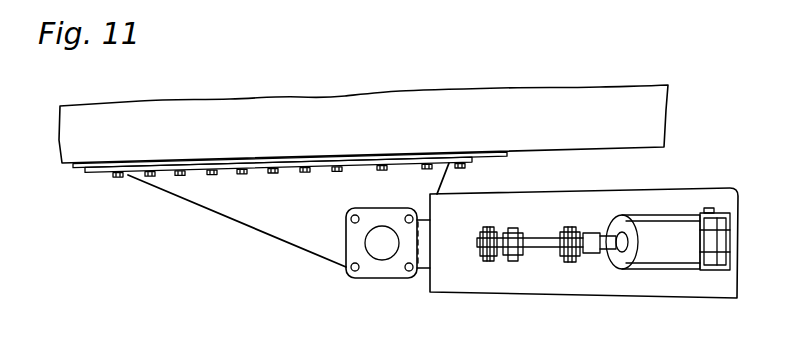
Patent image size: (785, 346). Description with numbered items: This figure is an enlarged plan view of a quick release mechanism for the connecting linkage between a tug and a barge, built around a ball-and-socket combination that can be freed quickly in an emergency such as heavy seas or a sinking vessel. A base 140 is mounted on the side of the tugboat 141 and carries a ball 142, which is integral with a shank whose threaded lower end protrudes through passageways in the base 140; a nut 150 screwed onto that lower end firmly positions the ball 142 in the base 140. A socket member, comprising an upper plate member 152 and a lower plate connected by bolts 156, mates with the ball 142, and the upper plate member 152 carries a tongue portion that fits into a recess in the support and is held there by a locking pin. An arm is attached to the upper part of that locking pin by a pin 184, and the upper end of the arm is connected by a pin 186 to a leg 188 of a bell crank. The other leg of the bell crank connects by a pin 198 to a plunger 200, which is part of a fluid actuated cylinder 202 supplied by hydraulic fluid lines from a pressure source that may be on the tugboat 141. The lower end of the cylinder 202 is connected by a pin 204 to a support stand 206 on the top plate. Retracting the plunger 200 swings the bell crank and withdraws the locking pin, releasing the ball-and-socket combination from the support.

The tugboat 141 is at (370, 93).
The base 140 is at (295, 238).
The ball 142 is at (380, 240).
The nut 150 is at (393, 280).
The upper plate member 152 is at (411, 196).
The bolts 156 is at (355, 272).
The pin 184 is at (490, 228).
The pin 186 is at (538, 213).
The leg 188 is at (552, 245).
The pin 198 is at (587, 210).
The plunger 200 is at (605, 254).
The fluid actuated cylinder 202 is at (656, 272).
The pin 204 is at (712, 212).
The support stand 206 is at (732, 256).